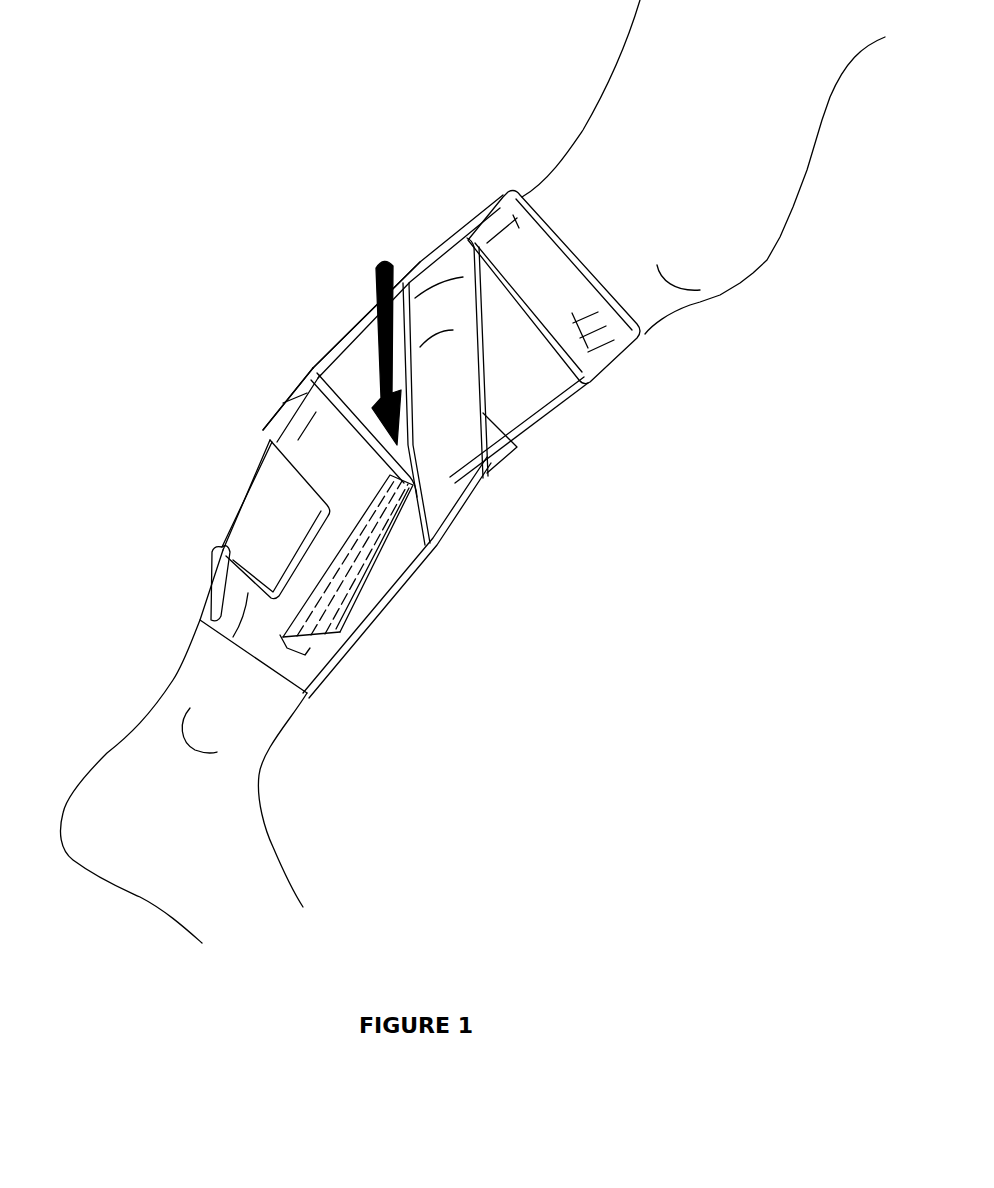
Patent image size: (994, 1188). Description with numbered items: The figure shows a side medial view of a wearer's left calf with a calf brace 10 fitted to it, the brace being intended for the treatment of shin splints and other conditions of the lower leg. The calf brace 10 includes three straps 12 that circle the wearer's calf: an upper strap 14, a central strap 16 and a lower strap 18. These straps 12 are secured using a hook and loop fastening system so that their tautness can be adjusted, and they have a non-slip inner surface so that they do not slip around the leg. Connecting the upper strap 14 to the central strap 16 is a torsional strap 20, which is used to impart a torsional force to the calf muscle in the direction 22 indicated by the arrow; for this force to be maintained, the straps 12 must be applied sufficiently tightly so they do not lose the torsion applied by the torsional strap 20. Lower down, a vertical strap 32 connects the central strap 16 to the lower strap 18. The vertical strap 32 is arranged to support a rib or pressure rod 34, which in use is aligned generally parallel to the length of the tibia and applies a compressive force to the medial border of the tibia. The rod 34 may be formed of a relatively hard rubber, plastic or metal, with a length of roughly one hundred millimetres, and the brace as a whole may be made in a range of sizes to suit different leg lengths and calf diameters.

The calf brace 10 is at (392, 200).
The straps 12 is at (600, 353).
The upper strap 14 is at (504, 195).
The central strap 16 is at (310, 397).
The lower strap 18 is at (223, 607).
The torsional strap 20 is at (453, 387).
The direction 22 is at (381, 280).
The vertical strap 32 is at (377, 607).
The pressure rod 34 is at (317, 640).